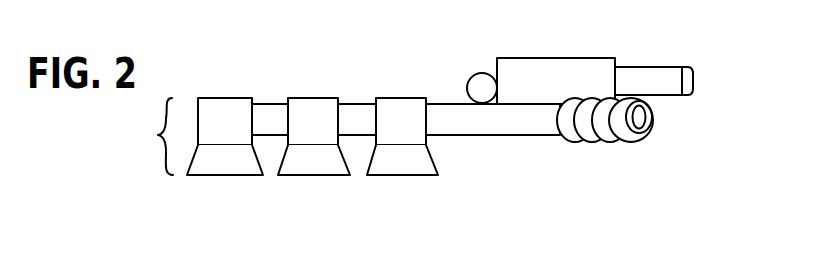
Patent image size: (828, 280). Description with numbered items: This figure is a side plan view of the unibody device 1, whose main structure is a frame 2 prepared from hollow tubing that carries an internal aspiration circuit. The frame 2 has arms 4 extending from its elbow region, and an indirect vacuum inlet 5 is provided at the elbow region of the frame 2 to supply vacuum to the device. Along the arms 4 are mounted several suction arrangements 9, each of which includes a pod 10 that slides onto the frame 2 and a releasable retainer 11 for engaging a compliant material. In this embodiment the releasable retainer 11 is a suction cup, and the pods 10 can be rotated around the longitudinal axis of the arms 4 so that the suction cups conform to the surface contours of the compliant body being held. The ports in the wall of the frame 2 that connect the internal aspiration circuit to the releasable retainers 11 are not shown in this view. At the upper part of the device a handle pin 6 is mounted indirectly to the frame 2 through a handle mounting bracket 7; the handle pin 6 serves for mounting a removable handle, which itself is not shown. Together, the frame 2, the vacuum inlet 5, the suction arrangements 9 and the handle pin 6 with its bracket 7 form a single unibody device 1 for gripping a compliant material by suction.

The unibody device 1 is at (645, 33).
The frame 2 is at (485, 135).
The arms 4 is at (357, 104).
The indirect vacuum inlet 5 is at (653, 128).
The handle pin 6 is at (693, 85).
The handle mounting bracket 7 is at (495, 82).
The suction arrangement 9 is at (158, 136).
The pod 10 is at (218, 98).
The releasable retainer 11 is at (235, 175).